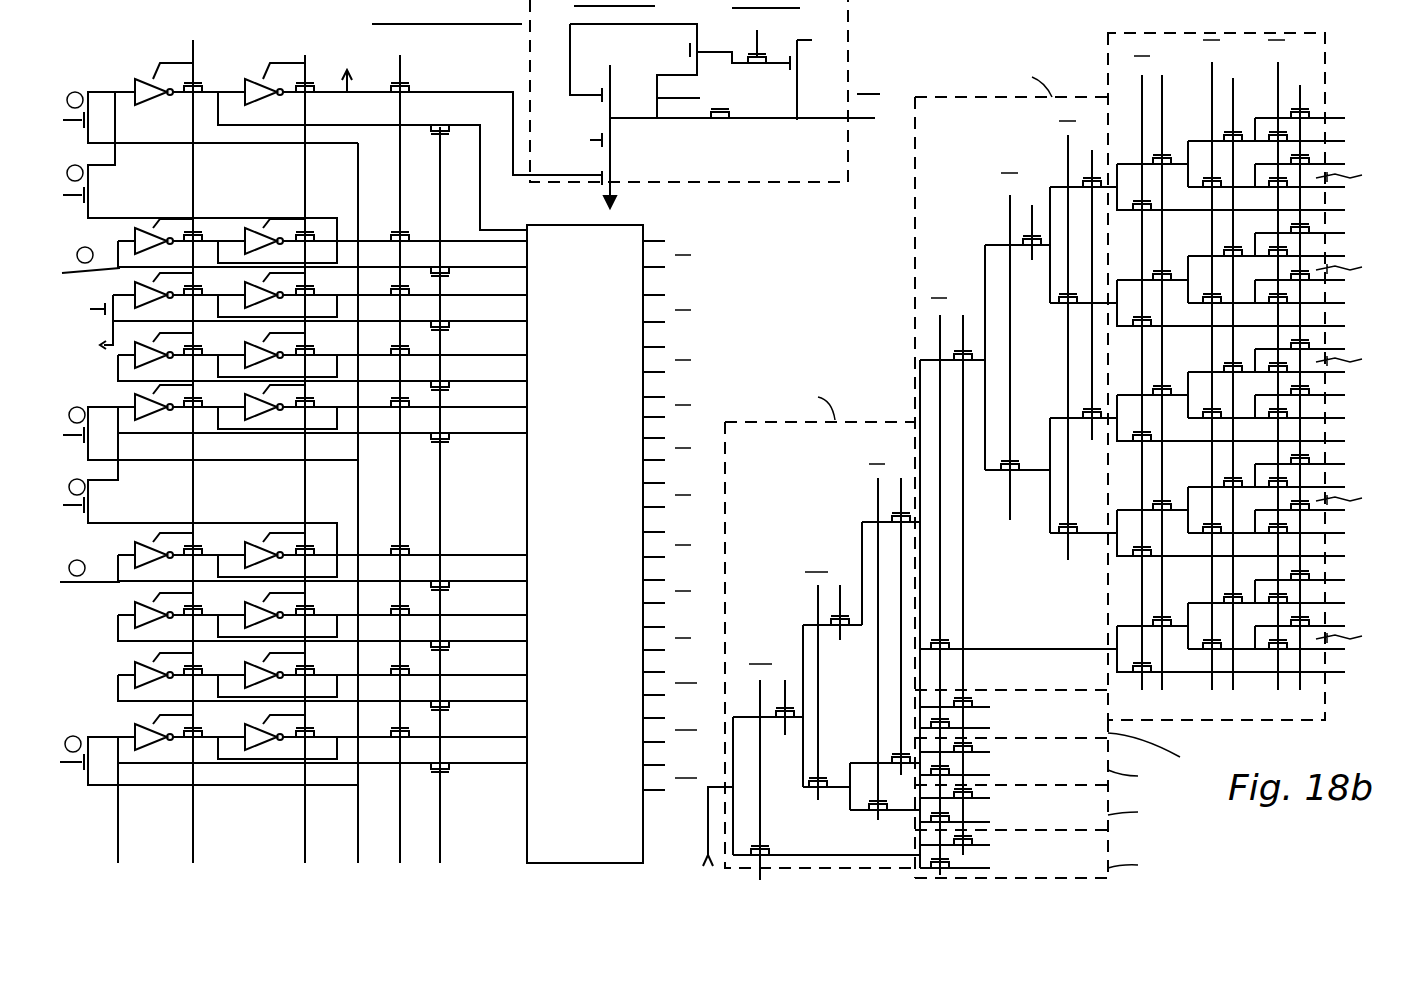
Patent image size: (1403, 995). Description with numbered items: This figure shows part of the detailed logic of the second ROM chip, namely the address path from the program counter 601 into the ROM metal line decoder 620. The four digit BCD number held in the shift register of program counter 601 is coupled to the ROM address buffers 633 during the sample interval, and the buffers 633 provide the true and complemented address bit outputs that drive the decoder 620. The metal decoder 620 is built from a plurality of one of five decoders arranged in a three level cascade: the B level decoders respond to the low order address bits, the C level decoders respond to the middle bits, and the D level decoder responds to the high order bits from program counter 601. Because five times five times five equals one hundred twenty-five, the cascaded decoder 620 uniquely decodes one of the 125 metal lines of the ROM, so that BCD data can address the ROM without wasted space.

The program counter 601 is at (270, 504).
The ROM address buffers 633 is at (612, 405).
The ROM metal line decoder 620 is at (902, 356).
The metal lines 125 is at (1352, 690).